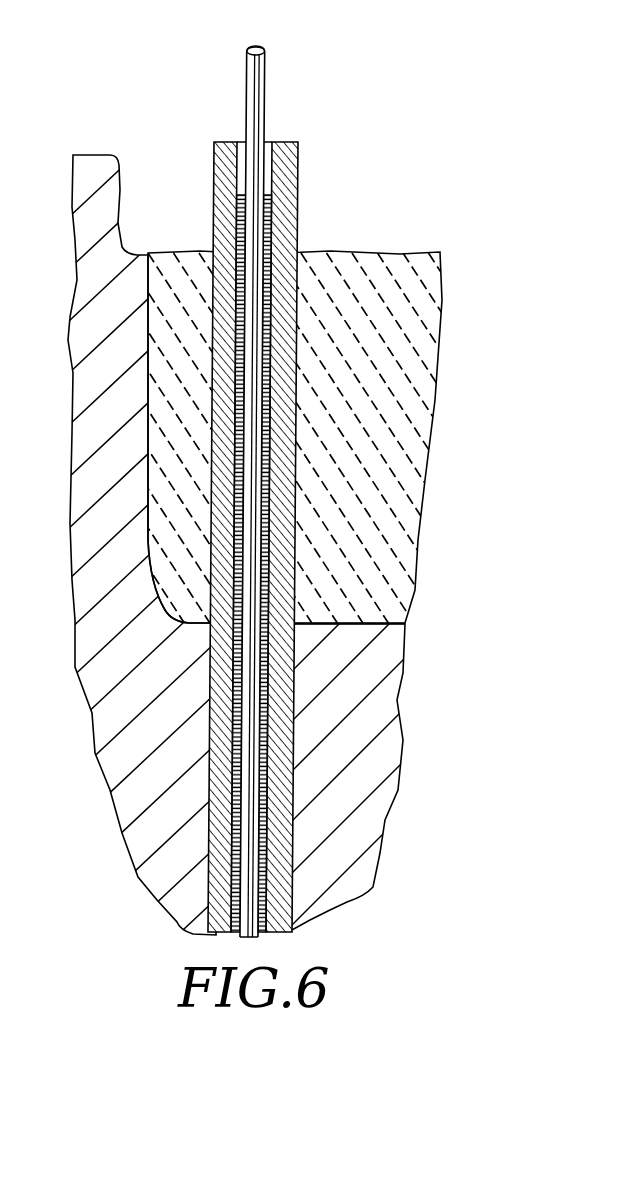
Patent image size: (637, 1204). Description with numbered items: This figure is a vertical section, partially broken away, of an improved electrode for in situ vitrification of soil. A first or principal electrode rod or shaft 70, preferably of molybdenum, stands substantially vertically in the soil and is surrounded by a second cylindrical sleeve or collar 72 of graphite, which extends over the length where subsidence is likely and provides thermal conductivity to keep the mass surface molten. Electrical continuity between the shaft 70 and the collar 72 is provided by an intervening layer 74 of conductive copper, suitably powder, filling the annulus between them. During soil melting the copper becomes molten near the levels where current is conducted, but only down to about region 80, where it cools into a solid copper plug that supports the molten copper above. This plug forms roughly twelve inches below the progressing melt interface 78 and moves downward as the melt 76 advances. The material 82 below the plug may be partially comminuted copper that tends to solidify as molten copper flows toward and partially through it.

The electrode rod or shaft 70 is at (268, 102).
The cylindrical sleeve or collar 72 is at (292, 191).
The intervening layer 74 is at (270, 248).
The melt 76 is at (423, 348).
The melt interface 78 is at (358, 623).
The region 80 is at (262, 744).
The material 82 is at (268, 892).